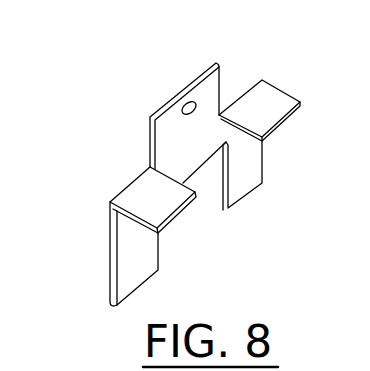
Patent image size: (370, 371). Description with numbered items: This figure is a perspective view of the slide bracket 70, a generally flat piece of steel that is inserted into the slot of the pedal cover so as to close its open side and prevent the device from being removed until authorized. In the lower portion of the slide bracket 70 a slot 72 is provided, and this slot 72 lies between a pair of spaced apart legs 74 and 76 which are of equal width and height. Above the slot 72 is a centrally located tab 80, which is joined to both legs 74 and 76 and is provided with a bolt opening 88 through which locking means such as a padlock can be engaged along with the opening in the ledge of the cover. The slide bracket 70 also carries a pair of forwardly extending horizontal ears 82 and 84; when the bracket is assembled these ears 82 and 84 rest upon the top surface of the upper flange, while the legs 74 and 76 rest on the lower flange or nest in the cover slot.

The slide bracket 70 is at (96, 174).
The slot 72 is at (208, 207).
The leg 74 is at (133, 254).
The leg 76 is at (250, 173).
The tab 80 is at (172, 125).
The ear 82 is at (163, 206).
The ear 84 is at (260, 98).
The bolt opening 88 is at (192, 104).